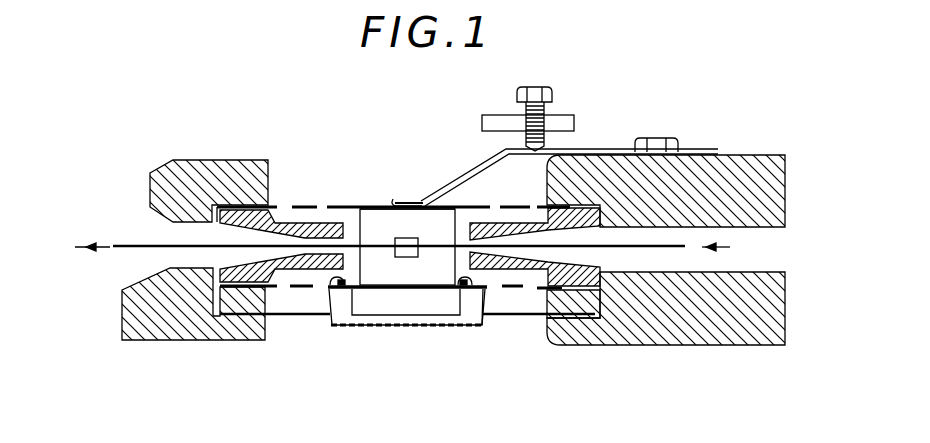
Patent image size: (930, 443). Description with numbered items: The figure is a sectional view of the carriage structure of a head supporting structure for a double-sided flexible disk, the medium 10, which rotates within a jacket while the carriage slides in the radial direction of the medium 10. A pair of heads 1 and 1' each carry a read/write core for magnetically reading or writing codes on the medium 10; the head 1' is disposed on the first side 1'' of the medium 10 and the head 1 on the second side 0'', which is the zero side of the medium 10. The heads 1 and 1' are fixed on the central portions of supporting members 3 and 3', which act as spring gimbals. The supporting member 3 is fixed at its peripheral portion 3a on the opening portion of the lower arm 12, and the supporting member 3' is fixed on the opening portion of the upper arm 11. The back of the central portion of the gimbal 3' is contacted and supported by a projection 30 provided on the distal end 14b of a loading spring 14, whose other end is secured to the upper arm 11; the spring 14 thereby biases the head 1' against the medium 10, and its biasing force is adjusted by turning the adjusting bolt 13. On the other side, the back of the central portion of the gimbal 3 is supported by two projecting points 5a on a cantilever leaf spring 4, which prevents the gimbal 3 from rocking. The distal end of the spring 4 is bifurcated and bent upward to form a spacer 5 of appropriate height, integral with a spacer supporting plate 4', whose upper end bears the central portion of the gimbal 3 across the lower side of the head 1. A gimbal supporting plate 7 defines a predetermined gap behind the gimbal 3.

The head 1 is at (407, 297).
The head 1' is at (388, 174).
The first side of flexible disk 1'' is at (225, 220).
The second side of flexible disk 0'' is at (335, 265).
The supporting member 3 is at (371, 334).
The supporting member 3' is at (373, 164).
The peripheral portion 3a is at (568, 205).
The cantilever leaf spring 4 is at (407, 355).
The spacer supporting plate 4' is at (407, 354).
The spacer 5 is at (482, 303).
The projecting points 5a is at (333, 284).
The gimbal supporting plate 7 is at (242, 302).
The medium 10 is at (122, 243).
The upper arm 11 is at (730, 157).
The lower arm 12 is at (708, 333).
The adjusting bolt 13 is at (548, 104).
The loading spring 14 is at (468, 165).
The distal end of loading spring 14b is at (414, 202).
The projection 30 is at (393, 203).